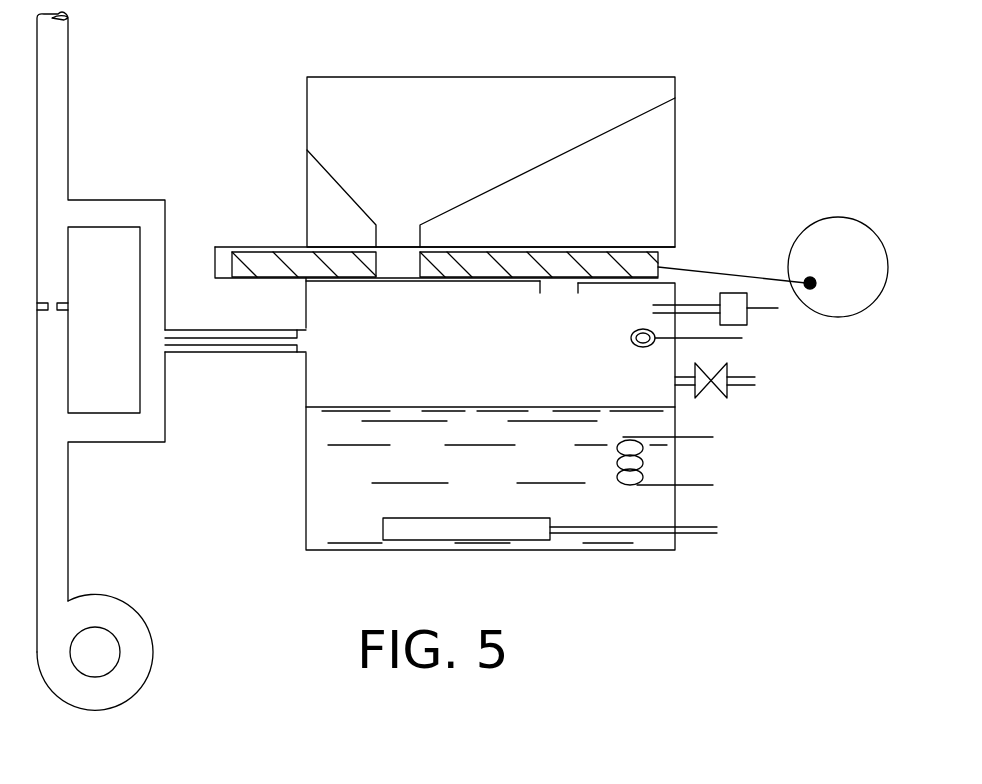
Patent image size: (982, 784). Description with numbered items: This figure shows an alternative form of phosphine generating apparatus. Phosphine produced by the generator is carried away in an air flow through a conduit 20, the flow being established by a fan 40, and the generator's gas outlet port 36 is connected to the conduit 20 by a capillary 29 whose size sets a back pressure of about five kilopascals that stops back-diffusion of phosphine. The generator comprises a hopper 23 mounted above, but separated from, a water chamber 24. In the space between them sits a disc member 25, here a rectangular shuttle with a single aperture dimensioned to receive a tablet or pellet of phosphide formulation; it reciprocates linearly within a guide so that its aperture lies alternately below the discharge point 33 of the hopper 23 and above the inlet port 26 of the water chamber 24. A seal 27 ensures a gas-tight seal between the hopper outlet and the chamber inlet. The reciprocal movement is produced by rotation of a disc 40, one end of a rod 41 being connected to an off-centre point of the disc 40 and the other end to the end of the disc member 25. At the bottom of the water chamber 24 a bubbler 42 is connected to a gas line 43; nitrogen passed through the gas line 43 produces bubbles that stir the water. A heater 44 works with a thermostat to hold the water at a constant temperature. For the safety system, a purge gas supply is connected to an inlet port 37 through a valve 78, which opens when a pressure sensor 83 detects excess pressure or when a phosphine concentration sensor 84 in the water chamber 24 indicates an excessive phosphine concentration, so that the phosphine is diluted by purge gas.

The conduit 20 is at (58, 128).
The hopper 23 is at (340, 118).
The water chamber 24 is at (307, 492).
The disc member 25 is at (270, 262).
The inlet port 26 is at (560, 293).
The seal 27 is at (527, 245).
The capillary 29 is at (258, 348).
The discharge point 33 is at (400, 228).
The gas outlet port 36 is at (305, 340).
The inlet port 37 is at (675, 380).
The fan 40 is at (853, 235).
The rod 41 is at (695, 268).
The bubbler 42 is at (517, 530).
The gas line 43 is at (703, 535).
The heater 44 is at (637, 485).
The valve 78 is at (715, 393).
The pressure sensor 83 is at (733, 313).
The phosphine concentration sensor 84 is at (635, 342).